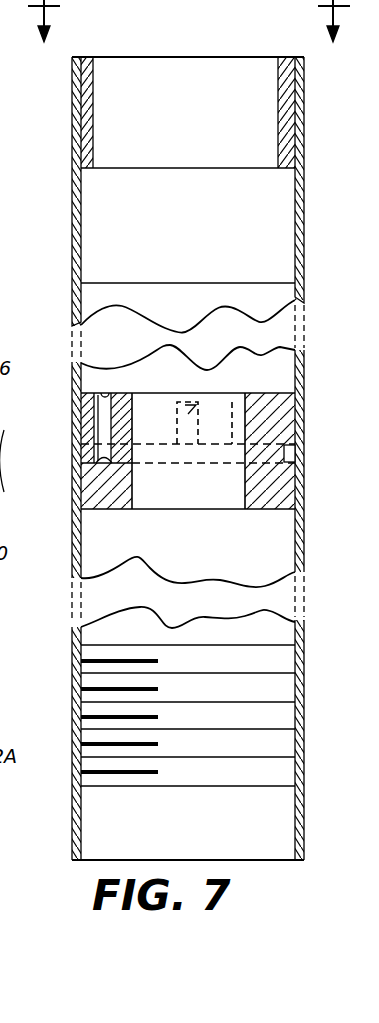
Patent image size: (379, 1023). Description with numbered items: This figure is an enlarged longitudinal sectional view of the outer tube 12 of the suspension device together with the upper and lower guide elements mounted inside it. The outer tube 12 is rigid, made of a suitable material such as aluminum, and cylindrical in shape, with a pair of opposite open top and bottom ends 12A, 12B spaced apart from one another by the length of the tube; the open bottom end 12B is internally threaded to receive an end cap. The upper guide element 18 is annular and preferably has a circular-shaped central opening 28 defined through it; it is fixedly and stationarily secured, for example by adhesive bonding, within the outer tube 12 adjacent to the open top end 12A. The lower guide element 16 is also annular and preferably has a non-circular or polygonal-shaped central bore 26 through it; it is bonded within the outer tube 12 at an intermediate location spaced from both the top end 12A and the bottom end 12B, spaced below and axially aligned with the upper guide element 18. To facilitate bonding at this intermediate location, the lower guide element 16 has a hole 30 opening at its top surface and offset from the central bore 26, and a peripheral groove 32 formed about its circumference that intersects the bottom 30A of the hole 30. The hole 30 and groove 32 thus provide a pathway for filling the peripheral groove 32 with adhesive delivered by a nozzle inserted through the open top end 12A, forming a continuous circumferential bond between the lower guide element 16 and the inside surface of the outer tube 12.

The outer tube 12 is at (310, 232).
The open top end 12A is at (72, 86).
The open bottom end 12B is at (72, 840).
The lower guide element 16 is at (274, 408).
The upper guide element 18 is at (82, 64).
The central bore 26 is at (140, 506).
The central opening 28 is at (278, 100).
The hole 30 is at (107, 397).
The bottom of the hole 30A is at (108, 464).
The peripheral groove 32 is at (203, 397).